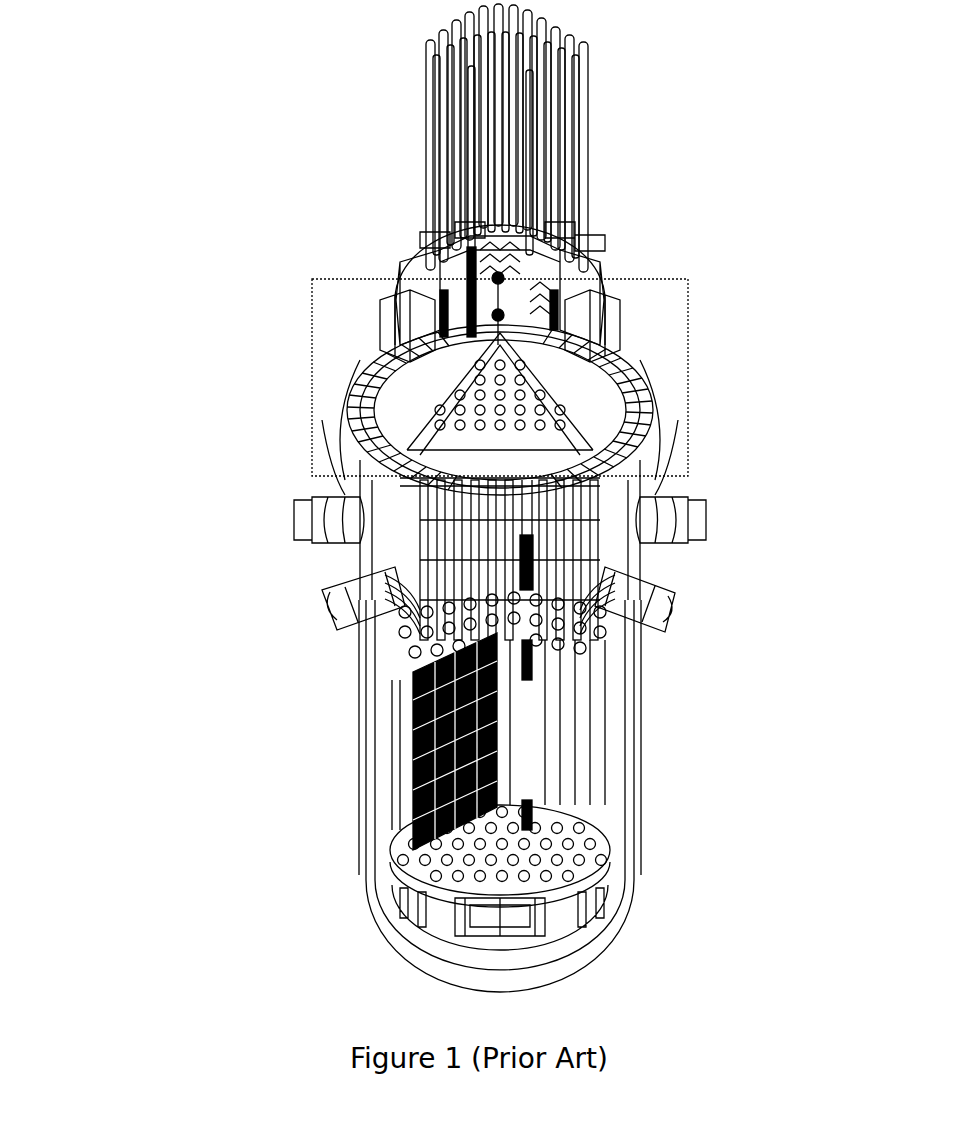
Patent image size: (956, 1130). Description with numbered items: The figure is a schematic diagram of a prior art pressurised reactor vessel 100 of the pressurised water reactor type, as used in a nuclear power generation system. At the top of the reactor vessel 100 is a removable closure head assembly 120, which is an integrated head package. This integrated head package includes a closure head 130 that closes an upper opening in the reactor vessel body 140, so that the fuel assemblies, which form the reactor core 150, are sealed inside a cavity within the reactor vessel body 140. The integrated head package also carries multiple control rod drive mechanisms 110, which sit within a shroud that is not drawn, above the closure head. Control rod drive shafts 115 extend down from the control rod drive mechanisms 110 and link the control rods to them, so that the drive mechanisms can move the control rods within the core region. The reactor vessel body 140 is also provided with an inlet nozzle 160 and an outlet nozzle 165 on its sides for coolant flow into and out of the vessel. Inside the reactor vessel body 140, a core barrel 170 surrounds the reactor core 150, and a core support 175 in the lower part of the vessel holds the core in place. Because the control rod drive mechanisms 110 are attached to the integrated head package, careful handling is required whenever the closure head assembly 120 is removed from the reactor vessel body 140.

The pressurised reactor vessel 100 is at (158, 271).
The control rod drive mechanisms 110 is at (493, 232).
The control rod drive shafts 115 is at (542, 533).
The removable closure head assembly 120 is at (617, 376).
The closure head 130 is at (655, 389).
The reactor vessel body 140 is at (636, 801).
The fuel assemblies/reactor core 150 is at (568, 735).
The inlet nozzle 160 is at (690, 549).
The outlet nozzle 165 is at (320, 578).
The core barrel 170 is at (401, 493).
The core support 175 is at (451, 918).